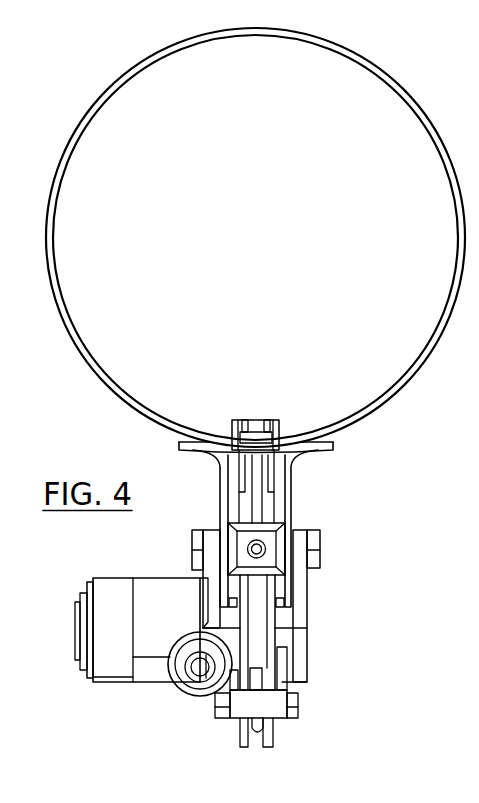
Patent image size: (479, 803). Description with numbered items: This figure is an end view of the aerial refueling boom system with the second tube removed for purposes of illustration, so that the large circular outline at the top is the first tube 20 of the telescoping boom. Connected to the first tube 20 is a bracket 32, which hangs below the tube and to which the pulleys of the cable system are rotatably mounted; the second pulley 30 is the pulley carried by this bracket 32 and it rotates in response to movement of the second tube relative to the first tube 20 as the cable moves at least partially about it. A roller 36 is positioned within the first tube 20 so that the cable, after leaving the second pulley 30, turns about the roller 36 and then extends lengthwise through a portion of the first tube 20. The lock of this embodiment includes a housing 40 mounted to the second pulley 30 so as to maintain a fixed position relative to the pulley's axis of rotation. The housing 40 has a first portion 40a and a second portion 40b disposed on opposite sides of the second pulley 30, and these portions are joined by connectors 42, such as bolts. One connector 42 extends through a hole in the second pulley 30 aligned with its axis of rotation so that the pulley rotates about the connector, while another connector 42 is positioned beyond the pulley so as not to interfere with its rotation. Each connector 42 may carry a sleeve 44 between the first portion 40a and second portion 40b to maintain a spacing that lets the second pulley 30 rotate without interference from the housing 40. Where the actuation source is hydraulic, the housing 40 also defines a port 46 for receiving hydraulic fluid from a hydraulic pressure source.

The first tube 20 is at (404, 88).
The second pulley 30 is at (258, 620).
The bracket 32 is at (221, 500).
The roller 36 is at (256, 421).
The housing 40 is at (162, 592).
The first portion of the housing 40a is at (120, 682).
The second portion of the housing 40b is at (307, 622).
The connectors 42 is at (310, 532).
The sleeve 44 is at (260, 712).
The port 46 is at (198, 673).